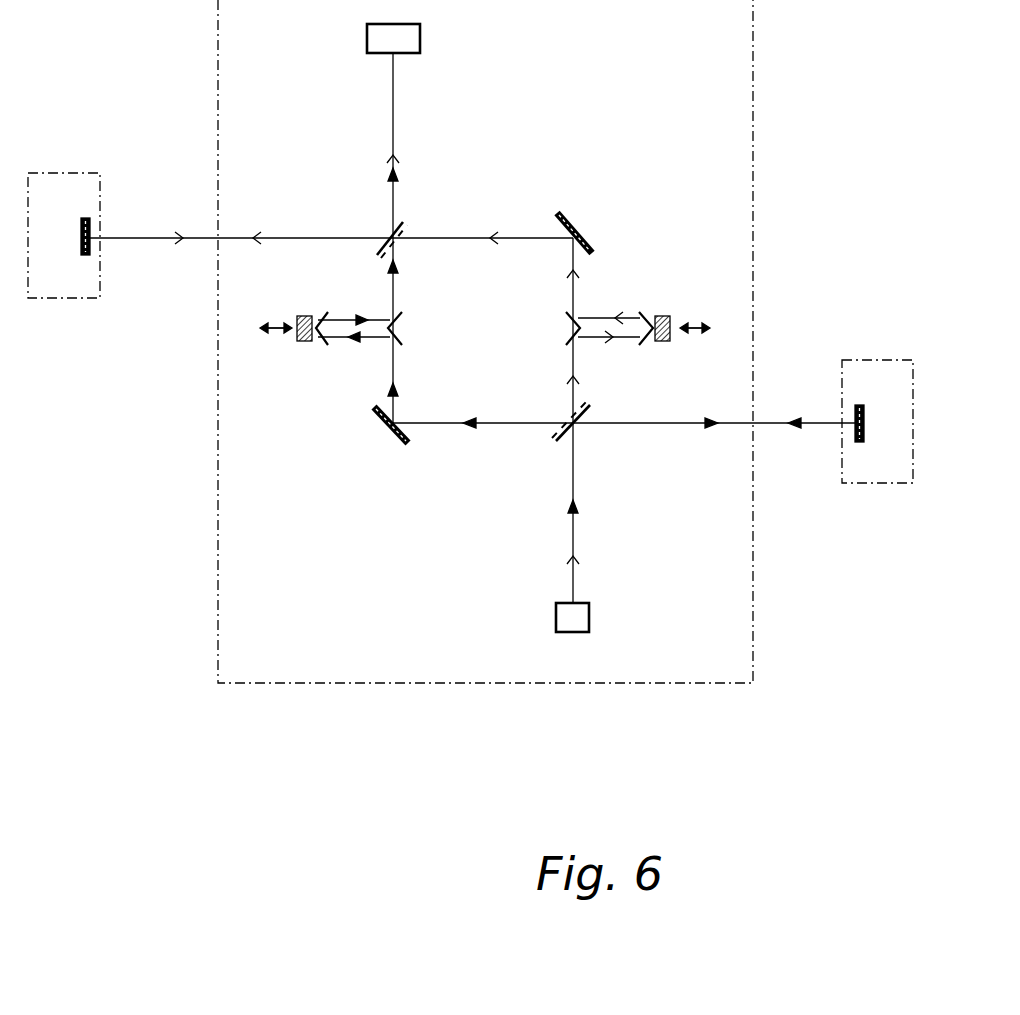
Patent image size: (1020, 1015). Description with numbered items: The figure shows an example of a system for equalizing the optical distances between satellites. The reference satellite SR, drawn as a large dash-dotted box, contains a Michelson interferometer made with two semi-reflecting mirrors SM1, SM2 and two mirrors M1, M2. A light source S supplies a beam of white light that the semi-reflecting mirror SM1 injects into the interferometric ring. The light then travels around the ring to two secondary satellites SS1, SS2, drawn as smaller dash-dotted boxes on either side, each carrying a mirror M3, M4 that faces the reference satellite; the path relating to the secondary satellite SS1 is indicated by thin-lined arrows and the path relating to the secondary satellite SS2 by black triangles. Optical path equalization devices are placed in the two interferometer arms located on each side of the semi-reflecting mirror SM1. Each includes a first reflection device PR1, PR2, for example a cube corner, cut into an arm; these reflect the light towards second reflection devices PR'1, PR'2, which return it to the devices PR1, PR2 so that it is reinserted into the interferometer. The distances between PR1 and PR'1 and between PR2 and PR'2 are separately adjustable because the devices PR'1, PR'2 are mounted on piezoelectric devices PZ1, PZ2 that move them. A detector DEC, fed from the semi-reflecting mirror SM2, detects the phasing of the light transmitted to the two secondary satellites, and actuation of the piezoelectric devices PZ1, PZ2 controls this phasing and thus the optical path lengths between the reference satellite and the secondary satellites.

The detector DEC is at (388, 42).
The semi-reflecting mirror SM2 is at (393, 236).
The semi-reflecting mirror SM1 is at (578, 426).
The mirror M1 is at (578, 233).
The mirror M2 is at (388, 428).
The mirror M3 is at (86, 218).
The mirror M4 is at (860, 405).
The piezoelectric device PZ1 is at (665, 315).
The piezoelectric device PZ2 is at (303, 315).
The first reflection device PR1 is at (574, 322).
The second reflection device PR'1 is at (679, 346).
The first reflection device PR2 is at (394, 318).
The second reflection device PR'2 is at (289, 347).
The light source S is at (572, 616).
The reference satellite SR is at (486, 683).
The secondary satellite SS1 is at (80, 272).
The secondary satellite SS2 is at (890, 465).